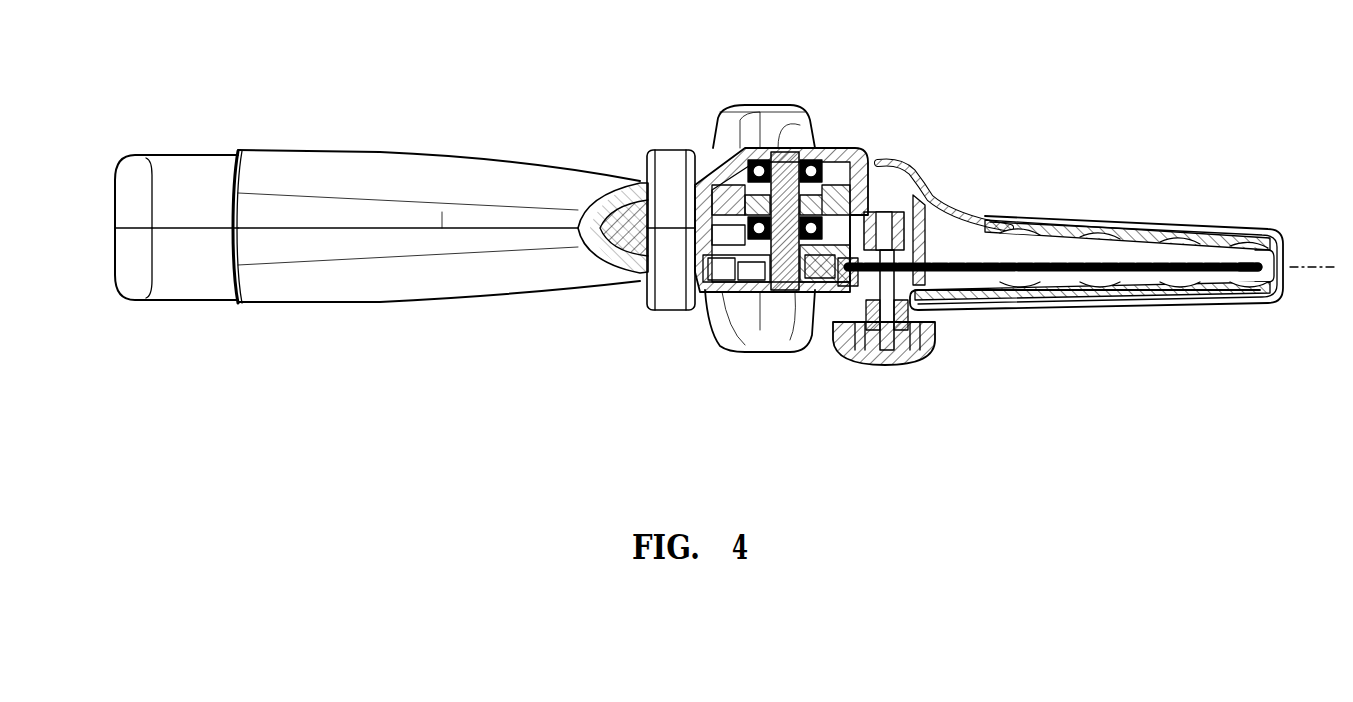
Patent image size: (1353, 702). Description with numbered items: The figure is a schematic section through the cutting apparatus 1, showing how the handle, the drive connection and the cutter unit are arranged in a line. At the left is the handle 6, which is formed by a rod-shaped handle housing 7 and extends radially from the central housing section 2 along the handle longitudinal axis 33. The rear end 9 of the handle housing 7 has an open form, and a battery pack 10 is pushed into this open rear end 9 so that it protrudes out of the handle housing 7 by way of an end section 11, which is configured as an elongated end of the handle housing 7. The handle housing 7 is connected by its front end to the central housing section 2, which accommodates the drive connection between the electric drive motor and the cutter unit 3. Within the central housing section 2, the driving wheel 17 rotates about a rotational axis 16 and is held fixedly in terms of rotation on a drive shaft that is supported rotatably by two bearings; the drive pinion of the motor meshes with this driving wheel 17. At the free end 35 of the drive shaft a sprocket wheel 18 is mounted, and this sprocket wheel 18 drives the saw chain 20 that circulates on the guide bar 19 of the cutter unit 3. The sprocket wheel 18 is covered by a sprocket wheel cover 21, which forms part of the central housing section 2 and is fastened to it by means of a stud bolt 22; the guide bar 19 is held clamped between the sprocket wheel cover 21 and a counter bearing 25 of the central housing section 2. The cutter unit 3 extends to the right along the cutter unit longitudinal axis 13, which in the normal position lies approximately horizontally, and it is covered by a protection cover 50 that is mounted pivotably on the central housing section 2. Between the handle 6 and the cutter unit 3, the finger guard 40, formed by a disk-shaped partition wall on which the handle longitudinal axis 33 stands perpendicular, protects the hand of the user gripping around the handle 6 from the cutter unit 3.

The cutting apparatus 1 is at (966, 114).
The central housing section 2 is at (710, 152).
The cutter unit 3 is at (1154, 222).
The handle 6 is at (382, 240).
The handle housing 7 is at (375, 152).
The rear end 9 is at (237, 240).
The battery pack 10 is at (202, 182).
The end section 11 is at (133, 258).
The cutter unit longitudinal axis 13 is at (1300, 265).
The rotational axis 16 is at (784, 140).
The driving wheel 17 is at (862, 160).
The sprocket wheel 18 is at (742, 292).
The guide bar 19 is at (1067, 273).
The saw chain 20 is at (1252, 270).
The sprocket wheel cover 21 is at (818, 295).
The stud bolt 22 is at (905, 328).
The counter bearing 25 is at (838, 290).
The handle longitudinal axis 33 is at (442, 228).
The free end 35 is at (783, 290).
The finger guard 40 is at (752, 125).
The protection cover 50 is at (975, 215).